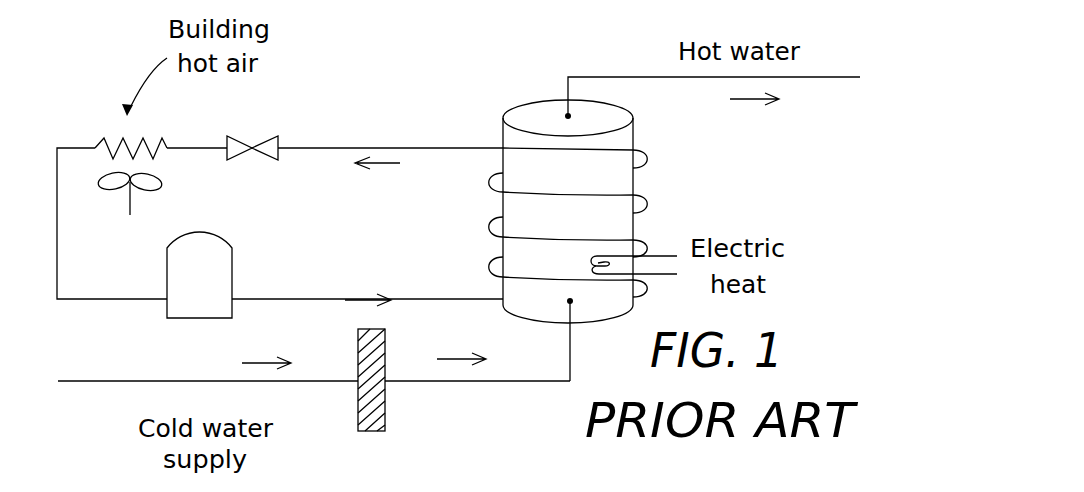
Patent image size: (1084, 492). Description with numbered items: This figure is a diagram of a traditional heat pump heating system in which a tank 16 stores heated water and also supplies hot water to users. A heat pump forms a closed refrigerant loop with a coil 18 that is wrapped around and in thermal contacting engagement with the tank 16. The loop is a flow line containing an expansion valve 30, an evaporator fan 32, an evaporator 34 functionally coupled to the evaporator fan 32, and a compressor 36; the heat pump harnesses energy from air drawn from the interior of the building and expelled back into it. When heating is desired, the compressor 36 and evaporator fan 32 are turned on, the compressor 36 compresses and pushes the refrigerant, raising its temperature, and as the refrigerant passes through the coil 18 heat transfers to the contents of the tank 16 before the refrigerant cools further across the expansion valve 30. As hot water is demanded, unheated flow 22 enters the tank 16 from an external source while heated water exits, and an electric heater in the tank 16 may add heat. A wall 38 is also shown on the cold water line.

The tank 16 is at (630, 134).
The coil 18 is at (637, 198).
The unheated flow 22 is at (105, 381).
The expansion valve 30 is at (265, 136).
The evaporator fan 32 is at (126, 197).
The evaporator 34 is at (95, 146).
The compressor 36 is at (215, 291).
The wall 38 is at (385, 397).